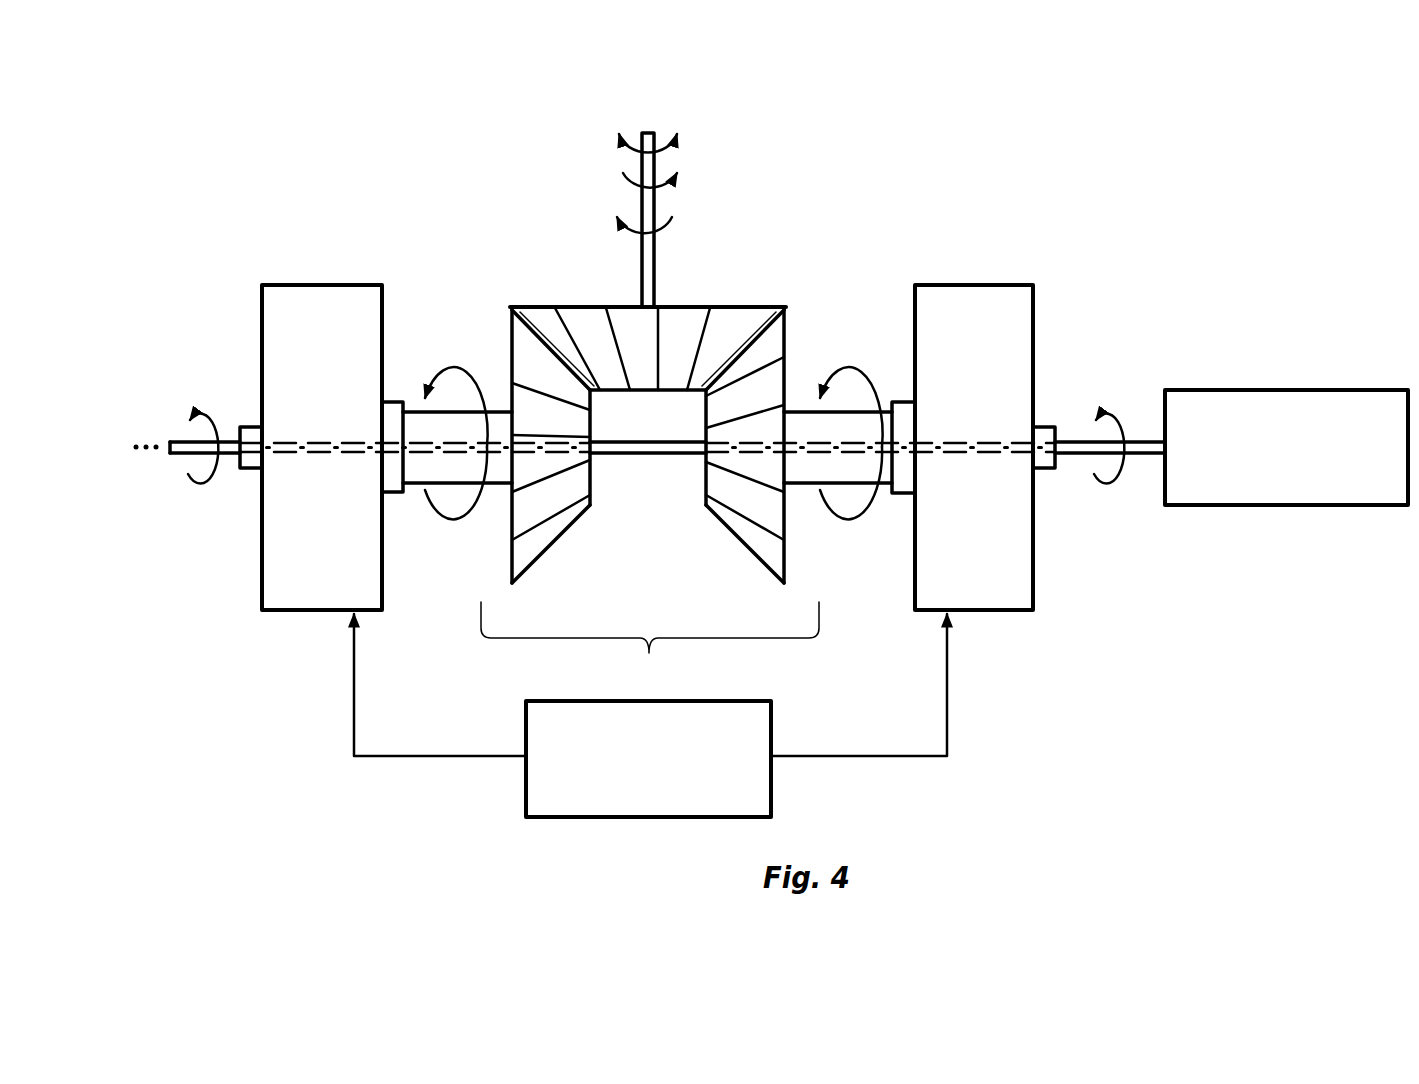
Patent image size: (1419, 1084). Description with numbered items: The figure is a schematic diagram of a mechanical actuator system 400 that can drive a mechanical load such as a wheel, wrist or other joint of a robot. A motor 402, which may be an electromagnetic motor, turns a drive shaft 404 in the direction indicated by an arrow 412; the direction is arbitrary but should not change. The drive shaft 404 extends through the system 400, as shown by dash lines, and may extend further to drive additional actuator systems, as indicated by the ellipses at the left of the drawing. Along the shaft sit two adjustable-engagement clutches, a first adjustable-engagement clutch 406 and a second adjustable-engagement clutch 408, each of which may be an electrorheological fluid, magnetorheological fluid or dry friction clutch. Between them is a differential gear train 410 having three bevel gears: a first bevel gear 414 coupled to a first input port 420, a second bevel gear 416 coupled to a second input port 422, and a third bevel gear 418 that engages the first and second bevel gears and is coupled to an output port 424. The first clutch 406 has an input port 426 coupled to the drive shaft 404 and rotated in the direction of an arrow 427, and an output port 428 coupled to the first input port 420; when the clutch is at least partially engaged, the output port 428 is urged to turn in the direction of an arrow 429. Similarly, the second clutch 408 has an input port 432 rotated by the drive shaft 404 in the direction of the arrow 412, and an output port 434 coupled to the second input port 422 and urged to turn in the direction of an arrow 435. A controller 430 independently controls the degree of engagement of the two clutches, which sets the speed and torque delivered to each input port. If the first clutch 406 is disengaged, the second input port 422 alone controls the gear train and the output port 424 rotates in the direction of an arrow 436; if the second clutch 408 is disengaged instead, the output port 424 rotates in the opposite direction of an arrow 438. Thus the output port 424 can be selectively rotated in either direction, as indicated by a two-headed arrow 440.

The mechanical actuator system 400 is at (1184, 124).
The motor 402 is at (1246, 506).
The drive shaft 404 is at (182, 457).
The first adjustable-engagement clutch 406 is at (300, 612).
The second adjustable-engagement clutch 408 is at (975, 612).
The differential gear train 410 is at (650, 643).
The arrow 412 is at (1094, 470).
The first bevel gear 414 is at (556, 542).
The second bevel gear 416 is at (730, 542).
The third bevel gear 418 is at (585, 306).
The first input port 420 is at (493, 383).
The second input port 422 is at (803, 408).
The output port 424 is at (655, 283).
The input port 426 is at (245, 427).
The arrow 427 is at (207, 482).
The output port 428 is at (397, 400).
The arrow 429 is at (445, 515).
The controller 430 is at (772, 782).
The input port 432 is at (1047, 427).
The output port 434 is at (902, 400).
The arrow 435 is at (828, 512).
The arrow 436 is at (687, 188).
The arrow 438 is at (685, 228).
The two-headed arrow 440 is at (687, 143).